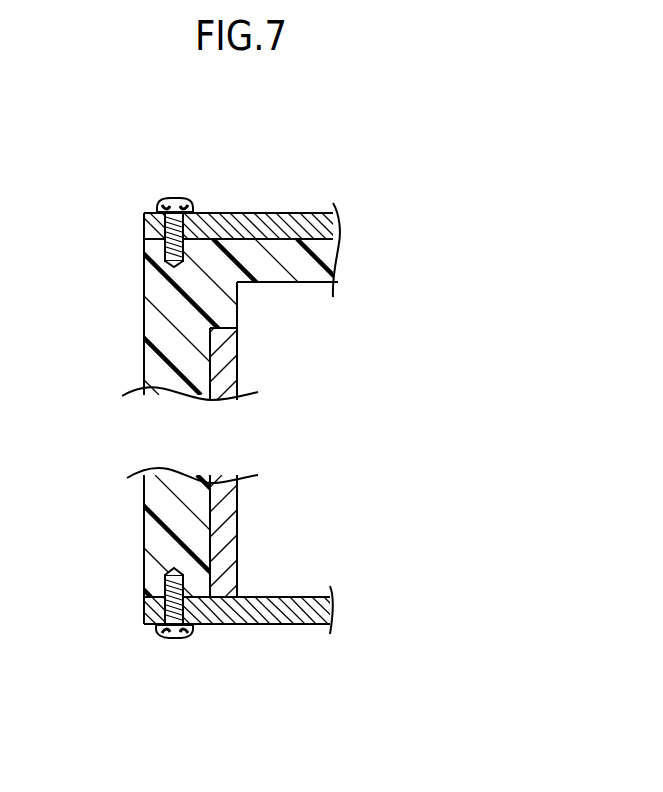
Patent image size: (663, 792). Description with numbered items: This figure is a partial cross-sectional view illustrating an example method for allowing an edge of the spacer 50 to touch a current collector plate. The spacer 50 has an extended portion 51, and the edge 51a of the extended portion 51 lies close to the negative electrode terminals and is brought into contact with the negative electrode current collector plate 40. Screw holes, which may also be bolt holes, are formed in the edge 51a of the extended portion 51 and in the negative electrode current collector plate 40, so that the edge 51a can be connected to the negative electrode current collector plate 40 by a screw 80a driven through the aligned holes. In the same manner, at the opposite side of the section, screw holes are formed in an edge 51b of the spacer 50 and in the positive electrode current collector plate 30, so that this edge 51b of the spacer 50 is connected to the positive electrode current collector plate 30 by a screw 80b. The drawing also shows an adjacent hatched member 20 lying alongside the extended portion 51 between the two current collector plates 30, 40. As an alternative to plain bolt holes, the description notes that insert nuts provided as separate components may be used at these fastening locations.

The frame member 20 is at (240, 360).
The positive electrode current collector plate 30 is at (233, 212).
The negative electrode current collector plate 40 is at (265, 617).
The spacer 50 is at (292, 258).
The extended portion 51 is at (156, 318).
The edge of the extended portion 51a is at (155, 597).
The edge of the spacer 51b is at (156, 239).
The screw 80a is at (173, 639).
The screw 80b is at (174, 198).